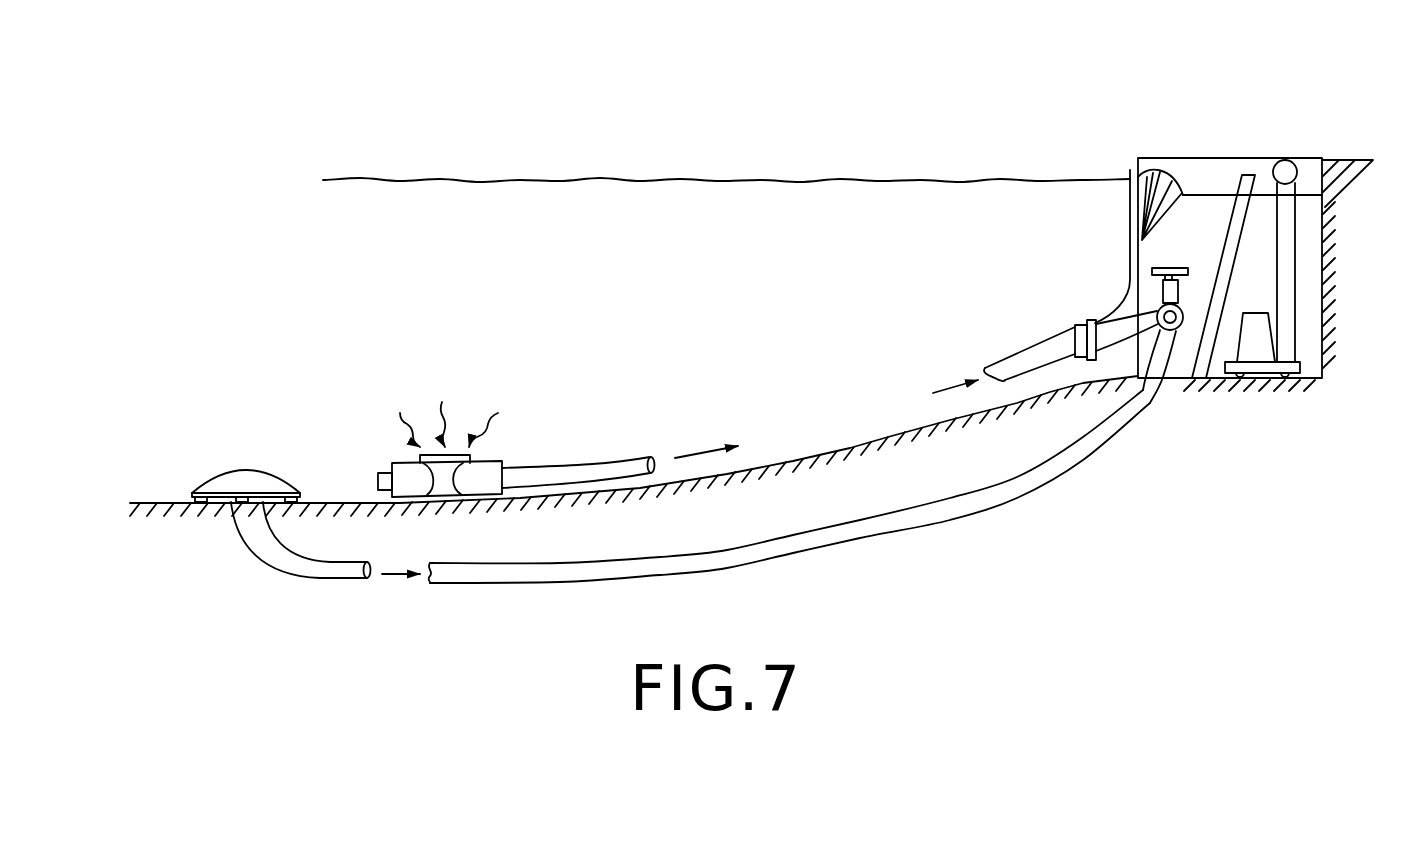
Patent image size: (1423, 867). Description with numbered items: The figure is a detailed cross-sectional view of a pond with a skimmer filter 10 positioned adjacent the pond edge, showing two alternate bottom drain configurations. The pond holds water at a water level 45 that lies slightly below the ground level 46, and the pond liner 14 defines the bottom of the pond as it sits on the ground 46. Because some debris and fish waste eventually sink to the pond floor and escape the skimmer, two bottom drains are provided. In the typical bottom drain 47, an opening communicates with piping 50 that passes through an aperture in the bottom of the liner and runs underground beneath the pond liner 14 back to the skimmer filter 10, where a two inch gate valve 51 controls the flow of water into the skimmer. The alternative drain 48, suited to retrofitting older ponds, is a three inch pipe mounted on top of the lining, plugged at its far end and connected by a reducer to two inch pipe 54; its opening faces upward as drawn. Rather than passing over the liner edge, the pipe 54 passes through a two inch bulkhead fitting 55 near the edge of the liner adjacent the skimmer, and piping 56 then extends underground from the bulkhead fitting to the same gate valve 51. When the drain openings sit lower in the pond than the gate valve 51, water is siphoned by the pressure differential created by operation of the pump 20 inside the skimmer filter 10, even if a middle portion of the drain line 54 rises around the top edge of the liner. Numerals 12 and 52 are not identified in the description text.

The skimmer filter 10 is at (1146, 145).
The inlet screen 12 is at (1167, 165).
The pond liner 14 is at (887, 437).
The pump 20 is at (1302, 332).
The water level 45 is at (713, 180).
The ground level 46 is at (1358, 158).
The bottom drain 47 is at (266, 462).
The alternative drain 48 is at (188, 502).
The piping 50 is at (248, 555).
The gate valve 51 is at (230, 512).
The pump 52 is at (378, 479).
The pipe 54 is at (562, 465).
The bulkhead fitting 55 is at (425, 449).
The piping 56 is at (1157, 380).